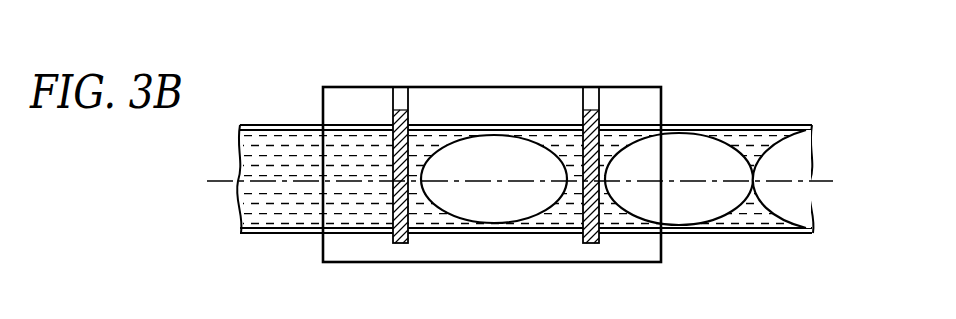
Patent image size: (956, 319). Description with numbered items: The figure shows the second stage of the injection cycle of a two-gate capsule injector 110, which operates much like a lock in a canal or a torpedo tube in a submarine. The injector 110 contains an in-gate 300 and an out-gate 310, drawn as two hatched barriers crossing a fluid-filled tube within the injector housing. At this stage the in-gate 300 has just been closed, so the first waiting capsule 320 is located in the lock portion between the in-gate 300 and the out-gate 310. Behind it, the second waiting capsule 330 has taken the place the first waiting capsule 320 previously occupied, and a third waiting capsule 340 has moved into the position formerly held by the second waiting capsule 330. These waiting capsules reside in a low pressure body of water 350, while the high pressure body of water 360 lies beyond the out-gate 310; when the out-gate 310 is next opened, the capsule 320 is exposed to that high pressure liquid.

The capsule injector 110 is at (323, 88).
The in-gate 300 is at (590, 88).
The out-gate 310 is at (399, 88).
The first waiting capsule 320 is at (465, 152).
The second waiting capsule 330 is at (674, 157).
The third waiting capsule 340 is at (790, 157).
The low pressure body of water 350 is at (757, 213).
The high pressure body of water 360 is at (271, 213).